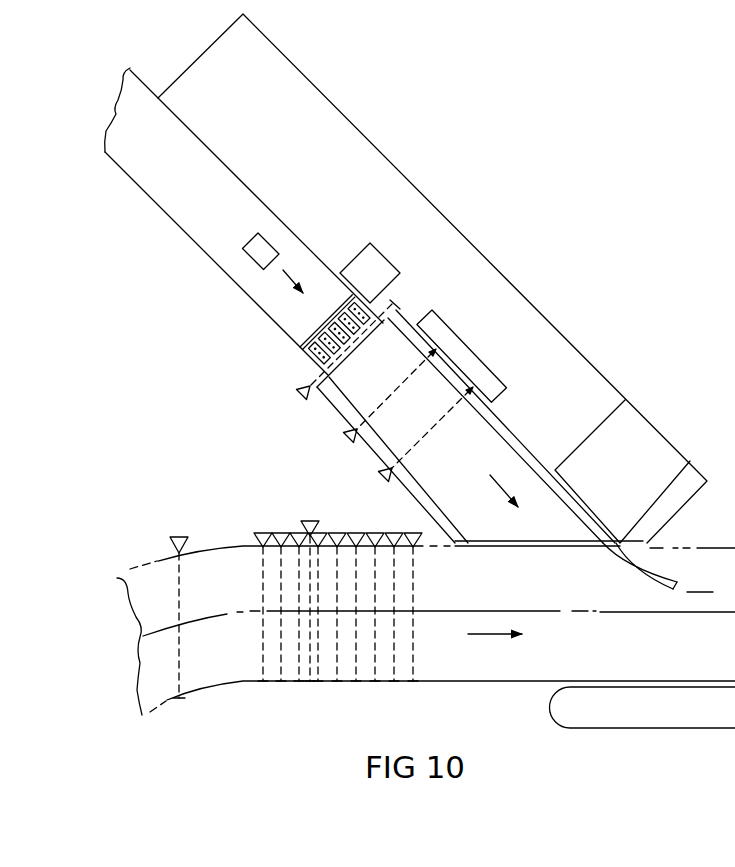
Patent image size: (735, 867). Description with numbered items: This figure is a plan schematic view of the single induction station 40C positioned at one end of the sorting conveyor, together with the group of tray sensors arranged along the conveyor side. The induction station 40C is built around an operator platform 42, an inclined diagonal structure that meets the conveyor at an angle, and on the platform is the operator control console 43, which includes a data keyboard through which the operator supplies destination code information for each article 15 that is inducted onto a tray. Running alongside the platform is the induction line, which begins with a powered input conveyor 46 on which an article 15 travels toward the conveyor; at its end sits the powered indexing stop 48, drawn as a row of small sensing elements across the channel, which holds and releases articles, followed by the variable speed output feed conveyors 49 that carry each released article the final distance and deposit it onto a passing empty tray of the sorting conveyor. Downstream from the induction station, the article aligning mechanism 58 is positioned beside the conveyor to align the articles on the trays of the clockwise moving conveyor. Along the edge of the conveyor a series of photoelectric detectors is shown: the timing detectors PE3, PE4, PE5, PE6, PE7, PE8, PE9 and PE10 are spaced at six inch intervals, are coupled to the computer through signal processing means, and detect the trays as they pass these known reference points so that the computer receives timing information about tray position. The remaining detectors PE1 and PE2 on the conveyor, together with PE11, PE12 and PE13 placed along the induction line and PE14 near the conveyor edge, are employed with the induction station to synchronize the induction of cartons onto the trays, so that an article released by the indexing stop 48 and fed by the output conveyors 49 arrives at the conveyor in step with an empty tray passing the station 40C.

The operator platform 42 is at (278, 102).
The powered input conveyor 46 is at (193, 212).
The articles 15 is at (248, 258).
The operator control console 43 is at (376, 270).
The induction station 40C is at (470, 168).
The powered indexing stop 48 is at (300, 346).
The variable speed output feed conveyors 49 is at (503, 457).
The article aligning mechanism 58 is at (687, 596).
The detector PE1 is at (179, 596).
The detector PE2 is at (263, 588).
The timing detector PE3 is at (281, 588).
The timing detector PE4 is at (299, 588).
The timing detector PE5 is at (318, 588).
The timing detector PE6 is at (337, 588).
The timing detector PE7 is at (356, 588).
The timing detector PE8 is at (375, 588).
The timing detector PE9 is at (394, 588).
The timing detector PE10 is at (413, 587).
The detector PE11 is at (325, 367).
The detector PE12 is at (367, 403).
The detector PE13 is at (404, 437).
The detector PE14 is at (310, 578).